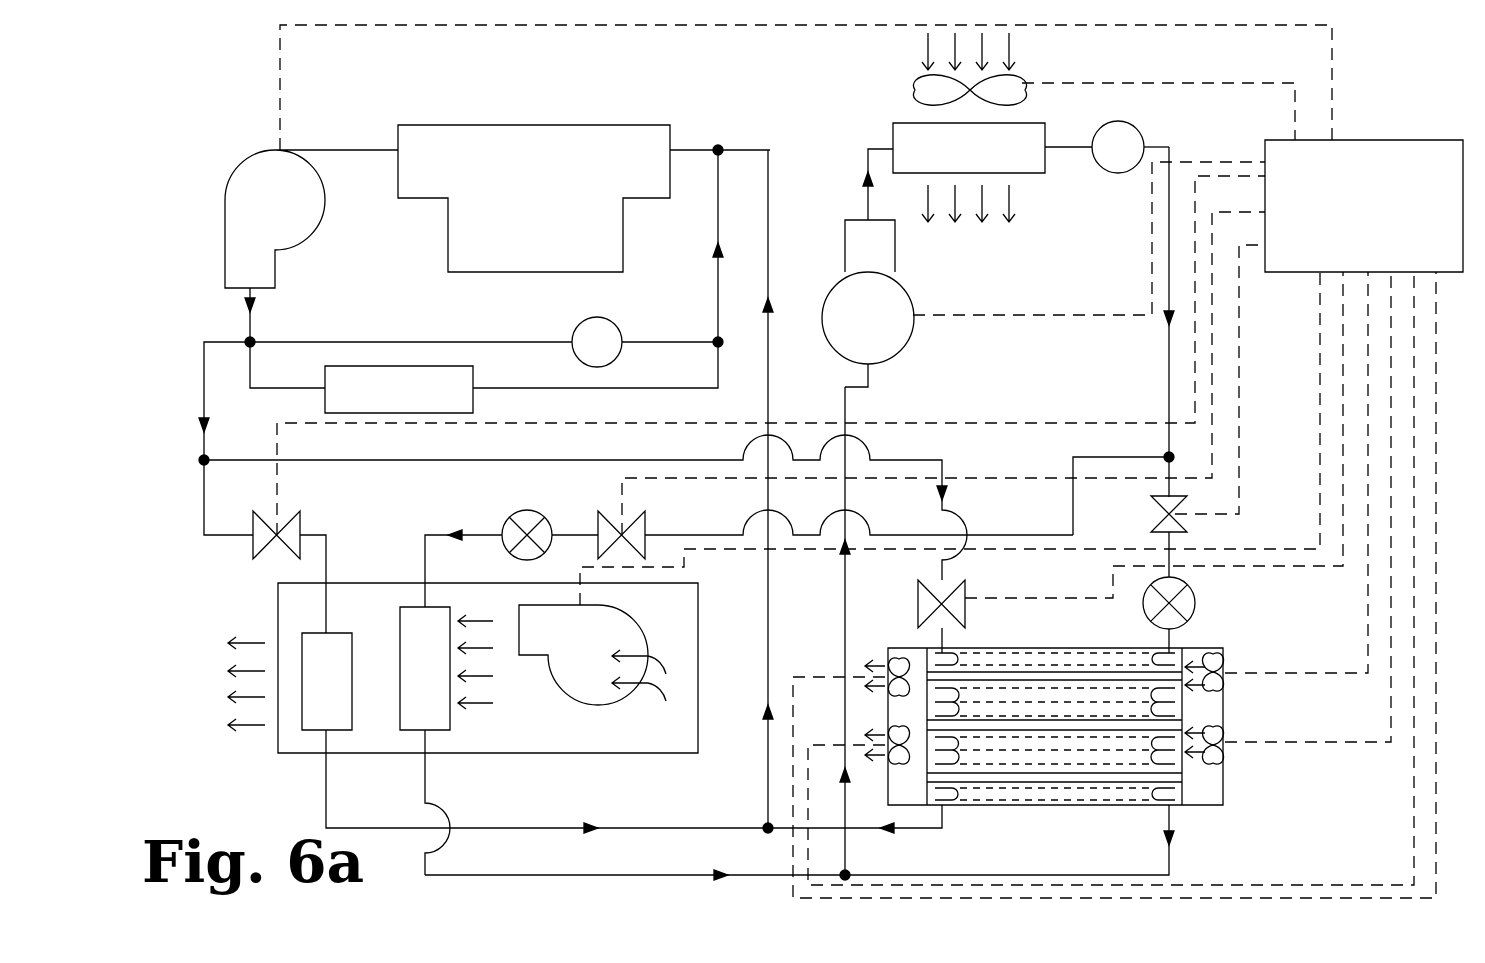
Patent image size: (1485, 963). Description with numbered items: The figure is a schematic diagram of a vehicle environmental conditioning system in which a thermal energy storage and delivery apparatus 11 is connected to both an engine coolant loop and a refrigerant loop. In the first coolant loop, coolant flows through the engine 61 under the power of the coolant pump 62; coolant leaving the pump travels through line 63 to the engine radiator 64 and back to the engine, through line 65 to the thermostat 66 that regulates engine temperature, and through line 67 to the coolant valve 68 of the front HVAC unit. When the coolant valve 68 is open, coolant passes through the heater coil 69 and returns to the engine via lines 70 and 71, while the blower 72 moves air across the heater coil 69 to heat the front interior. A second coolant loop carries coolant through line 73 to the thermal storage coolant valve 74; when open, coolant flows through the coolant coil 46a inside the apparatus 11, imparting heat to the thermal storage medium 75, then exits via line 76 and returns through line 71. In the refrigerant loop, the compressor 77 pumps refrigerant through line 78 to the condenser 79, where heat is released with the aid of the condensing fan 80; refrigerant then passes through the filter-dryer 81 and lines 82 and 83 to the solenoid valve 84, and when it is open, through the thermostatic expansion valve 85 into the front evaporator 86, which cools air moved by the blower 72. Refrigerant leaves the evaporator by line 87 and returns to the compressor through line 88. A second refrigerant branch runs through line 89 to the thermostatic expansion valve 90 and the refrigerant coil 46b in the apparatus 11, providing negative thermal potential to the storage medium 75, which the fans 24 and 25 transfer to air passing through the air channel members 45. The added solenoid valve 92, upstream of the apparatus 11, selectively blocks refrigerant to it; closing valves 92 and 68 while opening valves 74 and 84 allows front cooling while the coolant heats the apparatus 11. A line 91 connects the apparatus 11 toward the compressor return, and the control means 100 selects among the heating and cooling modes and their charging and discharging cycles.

The thermal energy storage and delivery apparatus 11 is at (1225, 775).
The fans 24 is at (1225, 735).
The fans 25 is at (902, 735).
The air channel members 45 is at (1035, 778).
The coolant coil 46a is at (955, 765).
The refrigerant coil 46b is at (1148, 680).
The engine 61 is at (540, 125).
The coolant pump 62 is at (252, 175).
The line 63 is at (268, 388).
The engine radiator 64 is at (380, 372).
The line 65 is at (460, 342).
The thermostat 66 is at (608, 328).
The line 67 is at (204, 380).
The coolant valve 68 is at (268, 545).
The heater coil 69 is at (312, 720).
The line 70 is at (365, 832).
The line 71 is at (768, 740).
The blower 72 is at (570, 695).
The line 73 is at (490, 460).
The thermal storage coolant valve 74 is at (918, 595).
The thermal storage medium 75 is at (1052, 790).
The line 76 is at (905, 832).
The compressor 77 is at (912, 300).
The line 78 is at (868, 165).
The condenser 79 is at (1030, 170).
The condensing fan 80 is at (916, 90).
The filter-dryer 81 is at (1134, 135).
The line 82 is at (1169, 360).
The line 83 is at (1008, 533).
The solenoid valve 84 is at (645, 535).
The thermostatic expansion valve 85 is at (505, 520).
The front evaporator 86 is at (410, 640).
The line 87 is at (620, 873).
The line 88 is at (845, 580).
The line 89 is at (1170, 540).
The thermostatic expansion valve 90 is at (1192, 605).
The line 91 is at (1170, 855).
The solenoid valve 92 is at (1152, 520).
The control means 100 is at (1380, 217).